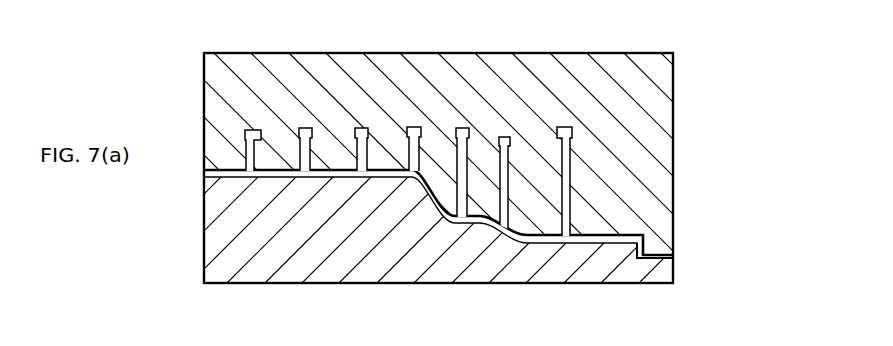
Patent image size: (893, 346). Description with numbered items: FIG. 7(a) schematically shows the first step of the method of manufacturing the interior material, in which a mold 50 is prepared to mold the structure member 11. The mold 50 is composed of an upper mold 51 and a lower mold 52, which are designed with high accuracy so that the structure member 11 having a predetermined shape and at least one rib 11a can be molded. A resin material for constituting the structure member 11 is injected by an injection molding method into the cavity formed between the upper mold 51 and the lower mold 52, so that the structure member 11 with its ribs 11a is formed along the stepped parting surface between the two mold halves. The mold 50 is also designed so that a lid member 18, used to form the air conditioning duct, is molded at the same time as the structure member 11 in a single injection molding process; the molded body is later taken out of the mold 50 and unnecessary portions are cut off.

The mold 50 is at (679, 52).
The upper mold 51 is at (222, 78).
The lower mold 52 is at (210, 263).
The structure member 11 is at (455, 220).
The rib 11a is at (306, 142).
The lid member 18 is at (643, 249).